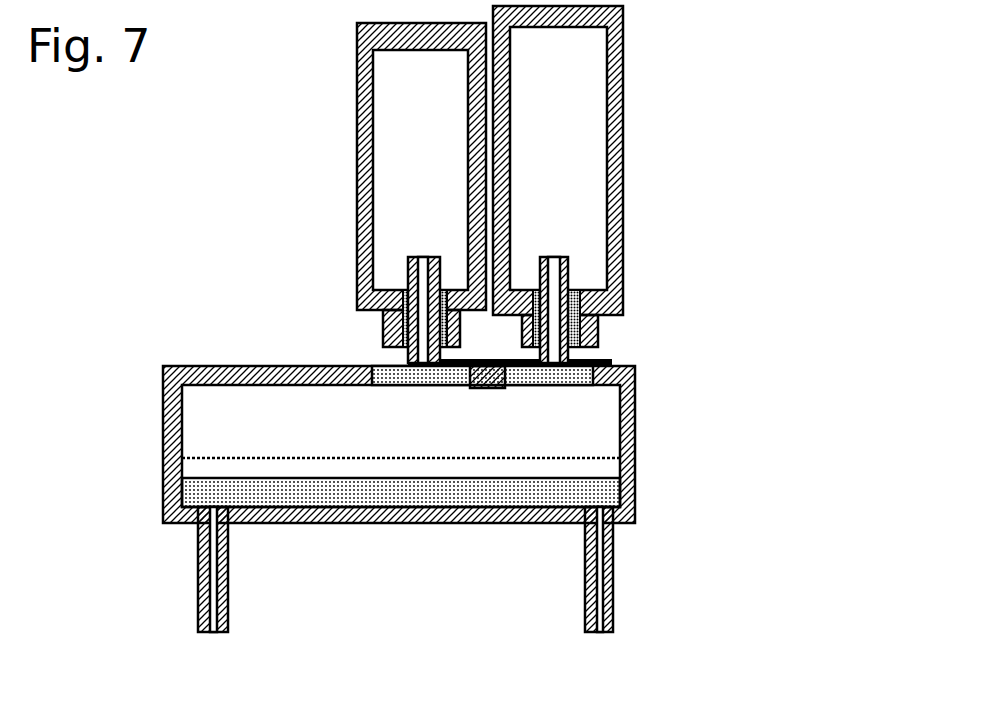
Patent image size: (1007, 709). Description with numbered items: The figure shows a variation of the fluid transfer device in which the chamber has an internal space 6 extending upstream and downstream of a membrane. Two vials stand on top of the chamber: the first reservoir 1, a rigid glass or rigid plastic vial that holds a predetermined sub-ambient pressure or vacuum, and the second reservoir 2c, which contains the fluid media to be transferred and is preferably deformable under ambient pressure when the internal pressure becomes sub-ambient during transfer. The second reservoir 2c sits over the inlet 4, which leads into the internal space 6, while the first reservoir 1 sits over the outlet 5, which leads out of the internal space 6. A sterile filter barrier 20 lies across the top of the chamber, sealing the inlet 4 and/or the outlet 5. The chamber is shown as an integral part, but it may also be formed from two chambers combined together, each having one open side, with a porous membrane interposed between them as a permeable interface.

The first reservoir 1 is at (552, 147).
The second reservoir 2c is at (398, 132).
The inlet 4 is at (397, 268).
The outlet 5 is at (558, 273).
The internal space 6 is at (578, 408).
The sterile filter barrier 20 is at (412, 388).